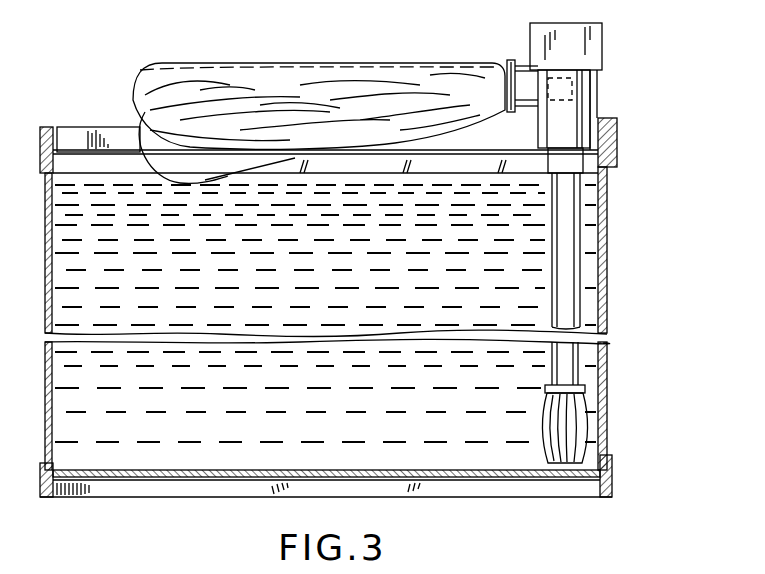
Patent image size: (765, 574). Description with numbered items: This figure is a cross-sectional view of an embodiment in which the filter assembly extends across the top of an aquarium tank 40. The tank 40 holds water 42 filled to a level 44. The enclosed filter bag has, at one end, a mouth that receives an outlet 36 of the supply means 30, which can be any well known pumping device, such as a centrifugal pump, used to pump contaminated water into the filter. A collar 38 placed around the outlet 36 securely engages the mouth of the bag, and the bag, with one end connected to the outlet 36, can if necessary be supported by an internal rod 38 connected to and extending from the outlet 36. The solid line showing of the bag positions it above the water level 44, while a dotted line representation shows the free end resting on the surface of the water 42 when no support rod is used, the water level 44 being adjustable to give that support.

The supply means 30 is at (592, 241).
The outlet 36 is at (509, 72).
The collar 38 is at (319, 110).
The aquarium tank 40 is at (308, 283).
The water 42 is at (325, 397).
The water level 44 is at (98, 134).